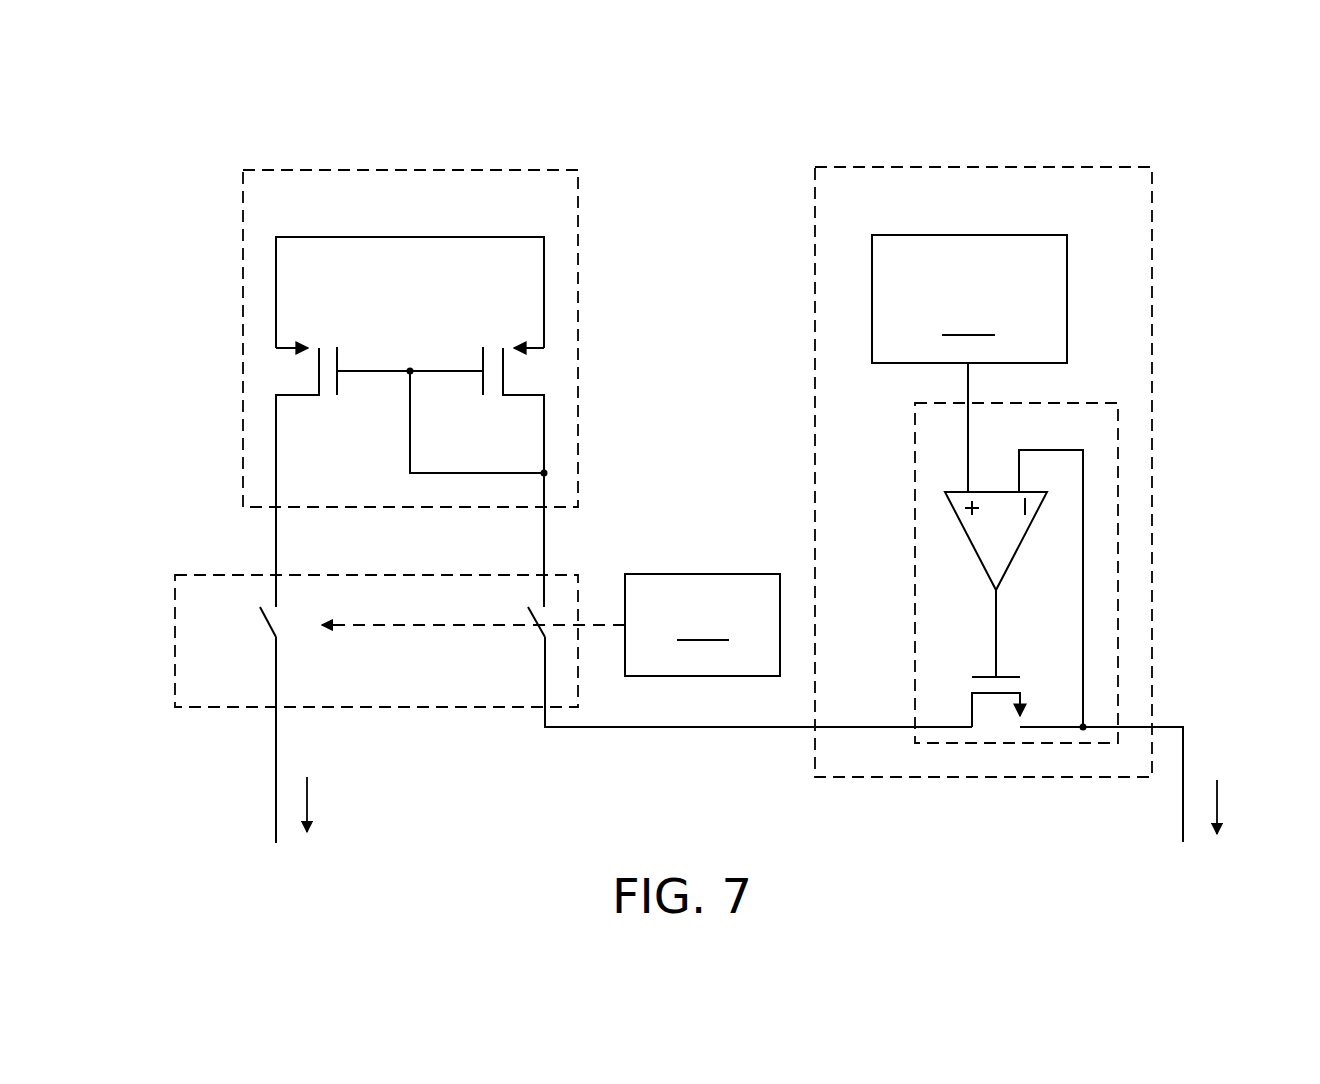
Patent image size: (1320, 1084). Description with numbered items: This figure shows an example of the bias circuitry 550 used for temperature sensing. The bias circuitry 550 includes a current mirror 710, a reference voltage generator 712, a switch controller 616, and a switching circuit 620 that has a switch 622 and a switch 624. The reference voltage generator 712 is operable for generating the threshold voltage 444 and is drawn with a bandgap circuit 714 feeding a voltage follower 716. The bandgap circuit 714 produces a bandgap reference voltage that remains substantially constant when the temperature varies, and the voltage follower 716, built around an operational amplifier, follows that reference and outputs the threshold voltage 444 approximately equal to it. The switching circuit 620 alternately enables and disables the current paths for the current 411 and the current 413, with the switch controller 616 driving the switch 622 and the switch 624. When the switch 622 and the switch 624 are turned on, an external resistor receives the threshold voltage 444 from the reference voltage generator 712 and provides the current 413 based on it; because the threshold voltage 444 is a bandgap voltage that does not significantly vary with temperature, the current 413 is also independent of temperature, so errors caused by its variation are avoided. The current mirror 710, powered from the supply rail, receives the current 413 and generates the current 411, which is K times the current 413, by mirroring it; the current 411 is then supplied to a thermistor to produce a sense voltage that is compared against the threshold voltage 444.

The bias circuitry 550 is at (230, 145).
The current mirror 710 is at (578, 313).
The reference voltage generator 712 is at (1152, 338).
The bandgap circuit 714 is at (969, 299).
The voltage follower 716 is at (915, 553).
The switching circuit 620 is at (175, 608).
The switch 622 is at (273, 638).
The switch 624 is at (543, 640).
The switch controller 616 is at (702, 625).
The current 411 is at (312, 817).
The current 413 is at (1218, 813).
The threshold voltage 444 is at (1178, 722).